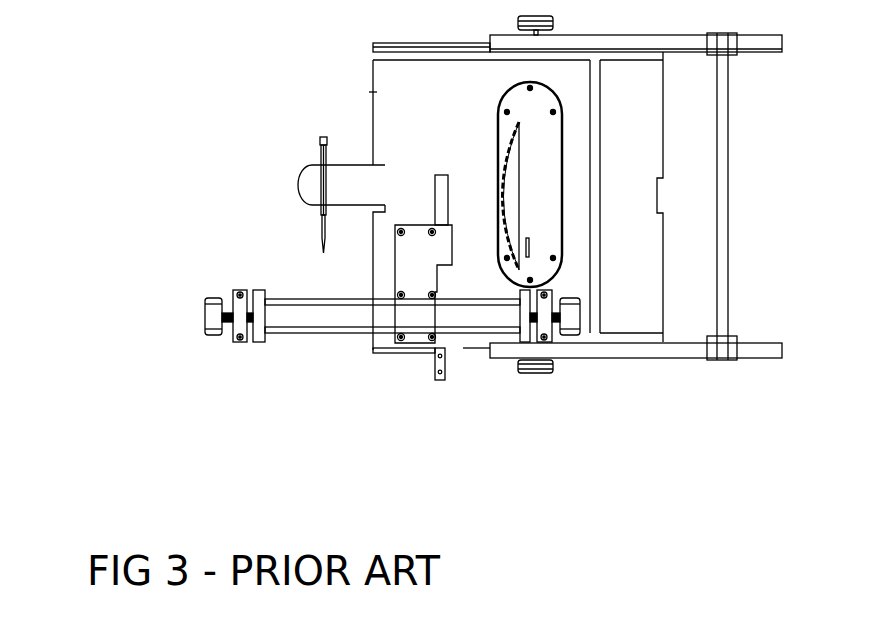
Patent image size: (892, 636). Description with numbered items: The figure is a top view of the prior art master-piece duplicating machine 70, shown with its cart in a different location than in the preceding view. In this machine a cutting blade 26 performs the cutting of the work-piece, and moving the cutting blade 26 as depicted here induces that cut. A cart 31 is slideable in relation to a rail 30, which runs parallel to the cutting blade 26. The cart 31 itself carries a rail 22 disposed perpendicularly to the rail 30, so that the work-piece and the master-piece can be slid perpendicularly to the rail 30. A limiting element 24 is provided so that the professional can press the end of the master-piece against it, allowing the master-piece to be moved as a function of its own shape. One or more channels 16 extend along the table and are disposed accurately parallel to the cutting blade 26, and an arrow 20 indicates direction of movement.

The channel 16 is at (600, 158).
The arrow 20 is at (490, 323).
The rail 22 is at (288, 322).
The limiting element 24 is at (320, 250).
The cutting blade 26 is at (512, 168).
The rail 30 is at (440, 282).
The cart 31 is at (418, 323).
The master-piece duplicating machine 70 is at (305, 89).